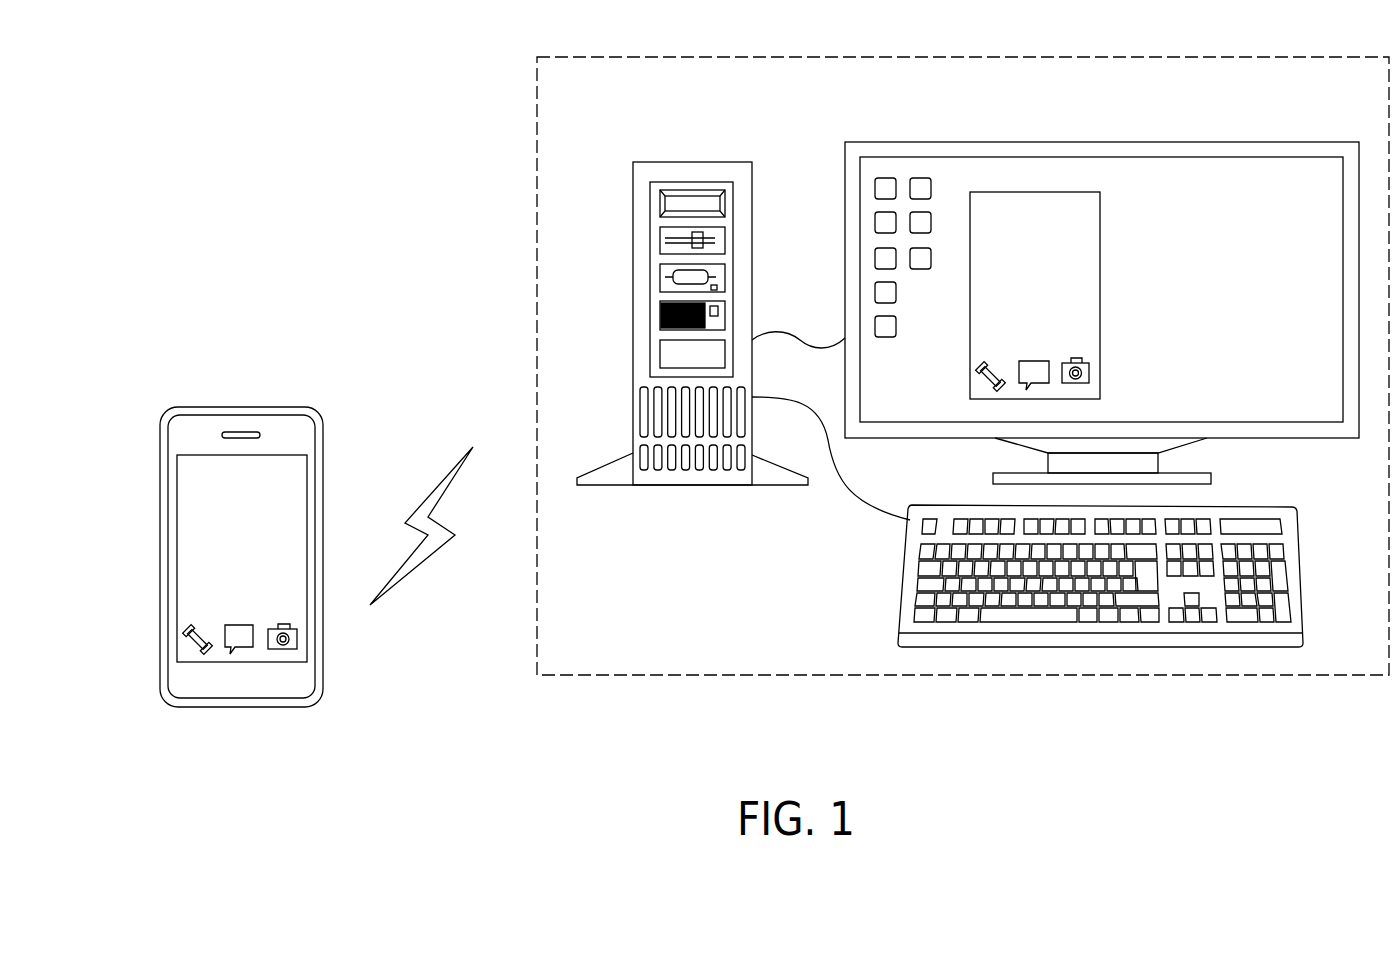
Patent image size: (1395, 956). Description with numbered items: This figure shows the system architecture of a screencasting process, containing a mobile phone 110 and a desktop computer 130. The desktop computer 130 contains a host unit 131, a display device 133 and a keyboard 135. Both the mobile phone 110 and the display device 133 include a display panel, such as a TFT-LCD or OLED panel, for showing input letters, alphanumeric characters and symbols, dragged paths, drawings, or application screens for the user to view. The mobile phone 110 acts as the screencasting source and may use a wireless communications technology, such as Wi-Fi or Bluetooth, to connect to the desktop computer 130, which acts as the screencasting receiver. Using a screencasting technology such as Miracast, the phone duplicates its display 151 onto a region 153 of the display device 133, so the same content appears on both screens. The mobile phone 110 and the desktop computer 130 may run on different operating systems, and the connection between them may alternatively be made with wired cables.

The mobile phone 110 is at (271, 513).
The desktop computer 130 is at (537, 100).
The host unit 131 is at (692, 162).
The display device 133 is at (1102, 277).
The keyboard 135 is at (905, 572).
The display 151 is at (310, 537).
The region 153 is at (1100, 292).